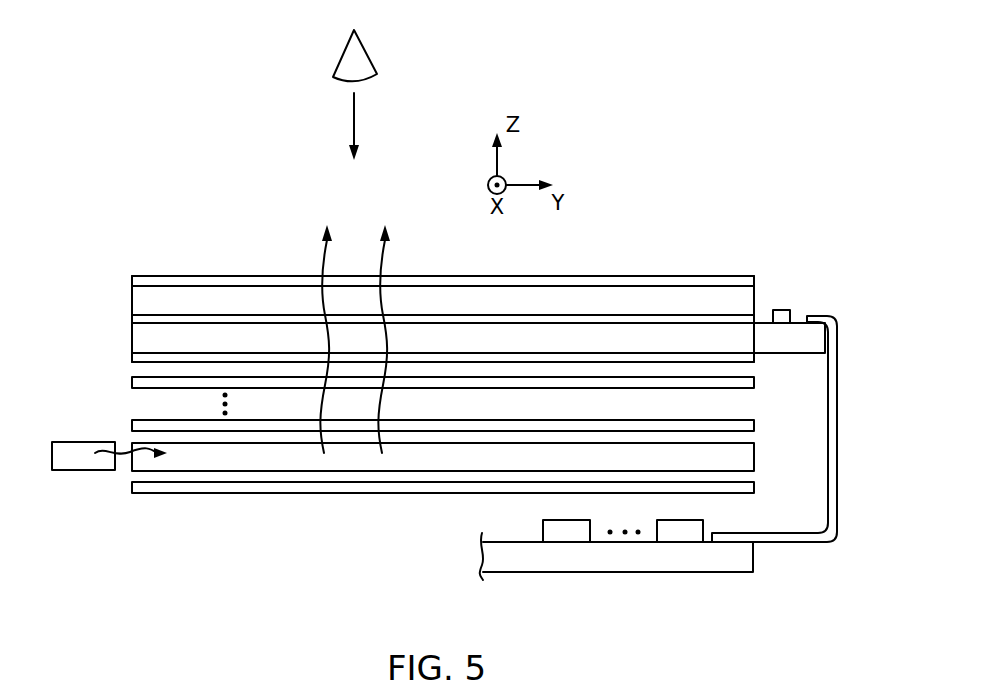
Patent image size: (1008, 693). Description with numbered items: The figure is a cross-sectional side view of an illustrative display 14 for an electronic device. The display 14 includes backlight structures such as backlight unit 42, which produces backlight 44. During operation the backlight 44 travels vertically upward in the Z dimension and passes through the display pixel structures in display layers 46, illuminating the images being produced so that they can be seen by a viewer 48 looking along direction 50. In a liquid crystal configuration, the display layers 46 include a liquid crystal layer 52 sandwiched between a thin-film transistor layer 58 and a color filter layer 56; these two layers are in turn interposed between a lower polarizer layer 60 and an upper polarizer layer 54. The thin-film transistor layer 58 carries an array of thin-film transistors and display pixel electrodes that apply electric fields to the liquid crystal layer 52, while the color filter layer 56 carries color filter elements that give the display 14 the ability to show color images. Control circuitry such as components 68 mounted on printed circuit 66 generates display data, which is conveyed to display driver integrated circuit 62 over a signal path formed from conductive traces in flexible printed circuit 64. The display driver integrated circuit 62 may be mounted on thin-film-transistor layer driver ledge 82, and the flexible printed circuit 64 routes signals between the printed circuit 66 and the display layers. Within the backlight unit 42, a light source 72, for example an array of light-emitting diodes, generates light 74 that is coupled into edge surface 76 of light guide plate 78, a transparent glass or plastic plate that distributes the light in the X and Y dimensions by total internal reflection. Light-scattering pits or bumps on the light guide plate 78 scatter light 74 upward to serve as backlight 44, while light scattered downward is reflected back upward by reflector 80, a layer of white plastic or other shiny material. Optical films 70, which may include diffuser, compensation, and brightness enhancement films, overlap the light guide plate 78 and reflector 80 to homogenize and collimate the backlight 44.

The display 14 is at (778, 104).
The backlight unit 42 is at (762, 372).
The backlight 44 is at (328, 261).
The display layers 46 is at (120, 275).
The viewer 48 is at (366, 50).
The direction 50 is at (354, 127).
The liquid crystal layer 52 is at (250, 318).
The upper polarizer layer 54 is at (233, 277).
The color filter layer 56 is at (153, 295).
The thin-film transistor layer 58 is at (188, 332).
The lower polarizer layer 60 is at (147, 358).
The display driver integrated circuit 62 is at (792, 316).
The flexible printed circuit 64 is at (838, 366).
The printed circuit 66 is at (622, 563).
The components 68 is at (668, 520).
The optical films 70 is at (143, 389).
The light source 72 is at (68, 473).
The light 74 is at (125, 460).
The edge surface 76 is at (128, 463).
The light guide plate 78 is at (225, 457).
The reflector 80 is at (300, 494).
The thin-film-transistor layer driver ledge 82 is at (767, 299).